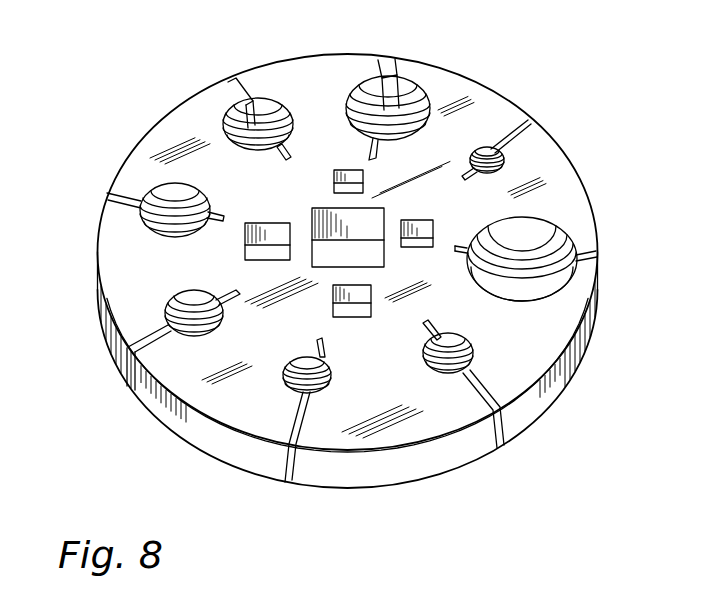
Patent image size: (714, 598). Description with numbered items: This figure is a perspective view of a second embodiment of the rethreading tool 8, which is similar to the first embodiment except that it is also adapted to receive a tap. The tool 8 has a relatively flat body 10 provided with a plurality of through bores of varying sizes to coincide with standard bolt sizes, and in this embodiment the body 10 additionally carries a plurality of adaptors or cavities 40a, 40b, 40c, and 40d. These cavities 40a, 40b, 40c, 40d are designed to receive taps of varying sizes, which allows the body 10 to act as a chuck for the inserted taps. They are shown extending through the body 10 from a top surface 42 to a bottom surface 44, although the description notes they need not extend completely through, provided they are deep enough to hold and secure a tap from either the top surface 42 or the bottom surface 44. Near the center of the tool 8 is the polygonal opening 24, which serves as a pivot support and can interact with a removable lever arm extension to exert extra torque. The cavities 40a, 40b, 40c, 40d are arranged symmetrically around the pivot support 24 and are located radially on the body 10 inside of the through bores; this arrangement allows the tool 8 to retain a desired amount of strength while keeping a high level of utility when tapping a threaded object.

The rethreading tool 8 is at (133, 125).
The body 10 is at (482, 122).
The polygonal opening 24 is at (367, 222).
The cavity 40a is at (246, 250).
The cavity 40b is at (362, 318).
The cavity 40c is at (433, 226).
The cavity 40d is at (278, 107).
The top surface 42 is at (312, 430).
The bottom surface 44 is at (200, 447).